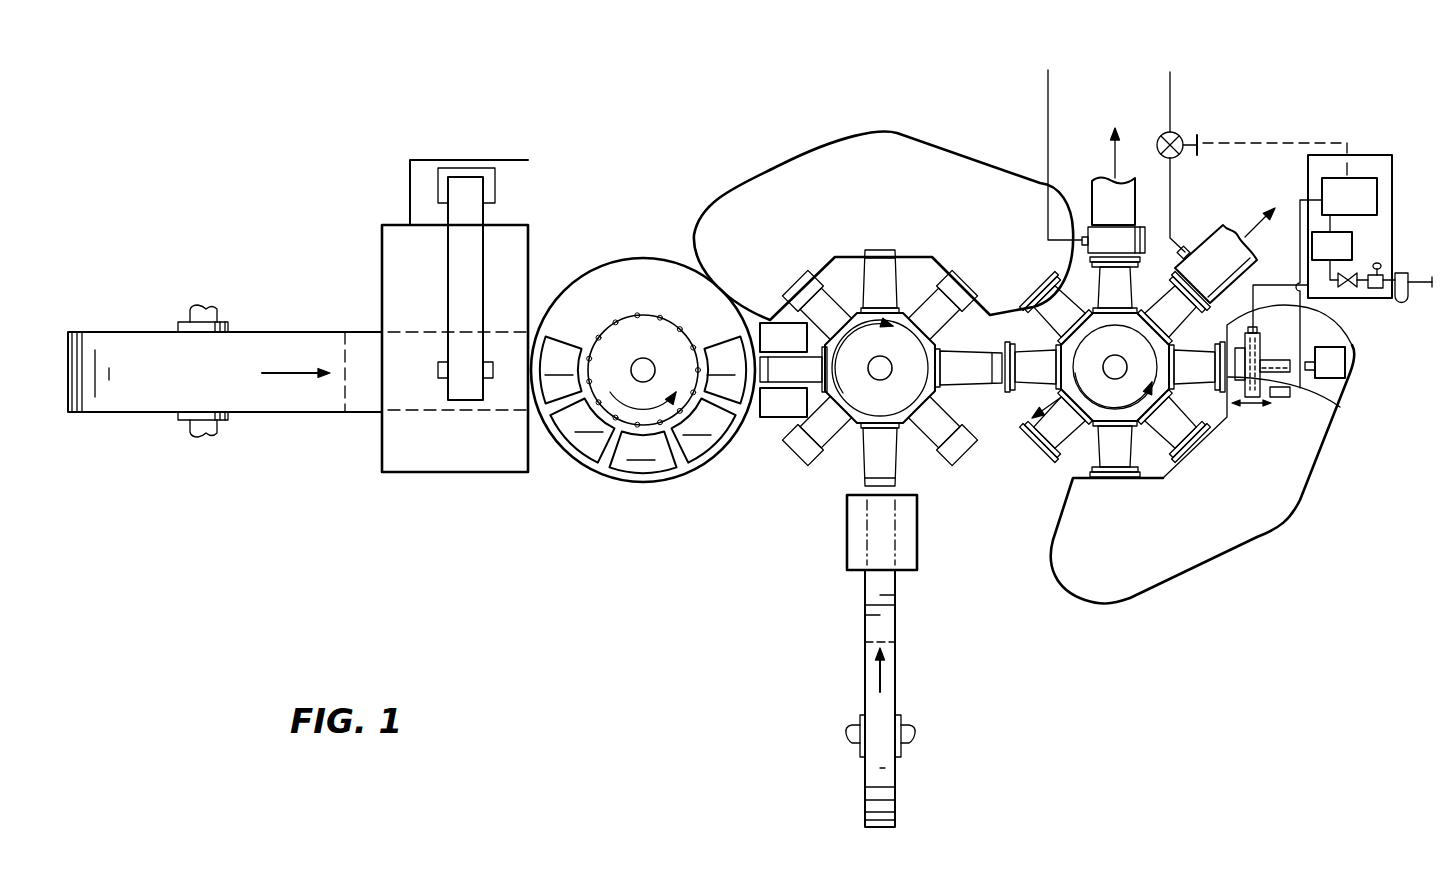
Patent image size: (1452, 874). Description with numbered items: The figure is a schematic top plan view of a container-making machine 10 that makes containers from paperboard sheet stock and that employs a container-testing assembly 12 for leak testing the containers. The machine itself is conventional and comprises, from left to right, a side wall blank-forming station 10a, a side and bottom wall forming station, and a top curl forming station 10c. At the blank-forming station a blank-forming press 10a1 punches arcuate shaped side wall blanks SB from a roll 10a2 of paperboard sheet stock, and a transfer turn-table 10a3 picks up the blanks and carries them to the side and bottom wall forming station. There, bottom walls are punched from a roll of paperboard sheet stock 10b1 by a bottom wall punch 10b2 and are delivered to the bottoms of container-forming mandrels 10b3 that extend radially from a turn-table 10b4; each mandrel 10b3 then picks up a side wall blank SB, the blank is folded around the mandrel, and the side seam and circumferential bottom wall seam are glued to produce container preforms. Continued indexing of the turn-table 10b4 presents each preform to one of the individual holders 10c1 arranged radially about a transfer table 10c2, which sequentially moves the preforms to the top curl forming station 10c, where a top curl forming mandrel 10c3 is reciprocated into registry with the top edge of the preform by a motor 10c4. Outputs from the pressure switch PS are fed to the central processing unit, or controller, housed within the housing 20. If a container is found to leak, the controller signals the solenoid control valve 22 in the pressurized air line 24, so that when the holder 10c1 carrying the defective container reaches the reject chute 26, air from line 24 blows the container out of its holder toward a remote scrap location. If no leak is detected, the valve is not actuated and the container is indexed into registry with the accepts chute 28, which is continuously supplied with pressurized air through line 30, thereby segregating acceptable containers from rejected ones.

The container-making machine 10 is at (645, 572).
The side wall blank-forming station 10a is at (345, 466).
The blank-forming press 10a1 is at (478, 456).
The roll of paperboard sheet stock 10a2 is at (205, 381).
The transfer turn-table 10a3 is at (608, 262).
The roll of paperboard sheet stock 10b1 is at (885, 702).
The bottom wall punch 10b2 is at (905, 528).
The container-forming mandrels 10b3 is at (932, 305).
The turn-table 10b4 is at (784, 269).
The top curl forming station 10c is at (1131, 393).
The holders 10c1 is at (1037, 390).
The transfer table 10c2 is at (1130, 348).
The top curl forming mandrel 10c3 is at (1340, 407).
The motor 10c4 is at (1345, 368).
The container-testing assembly 12 is at (1348, 318).
The housing 20 is at (1392, 220).
The solenoid control valve 22 is at (1163, 88).
The pressurized air line 24 is at (1183, 137).
The reject chute 26 is at (1231, 273).
The accepts chute 28 is at (1128, 216).
The line 30 is at (1050, 92).